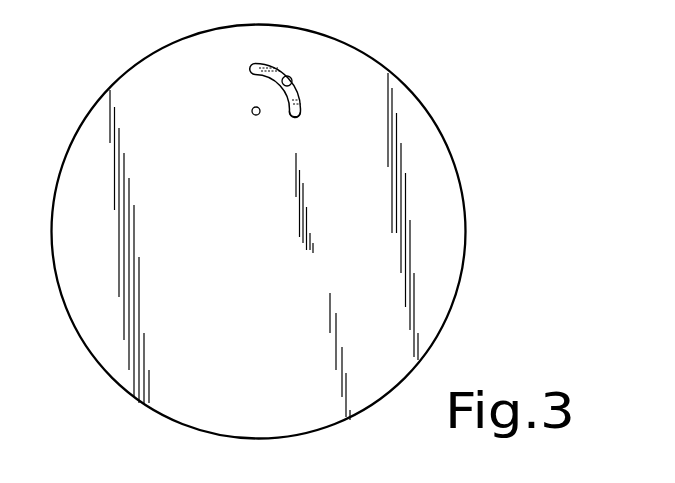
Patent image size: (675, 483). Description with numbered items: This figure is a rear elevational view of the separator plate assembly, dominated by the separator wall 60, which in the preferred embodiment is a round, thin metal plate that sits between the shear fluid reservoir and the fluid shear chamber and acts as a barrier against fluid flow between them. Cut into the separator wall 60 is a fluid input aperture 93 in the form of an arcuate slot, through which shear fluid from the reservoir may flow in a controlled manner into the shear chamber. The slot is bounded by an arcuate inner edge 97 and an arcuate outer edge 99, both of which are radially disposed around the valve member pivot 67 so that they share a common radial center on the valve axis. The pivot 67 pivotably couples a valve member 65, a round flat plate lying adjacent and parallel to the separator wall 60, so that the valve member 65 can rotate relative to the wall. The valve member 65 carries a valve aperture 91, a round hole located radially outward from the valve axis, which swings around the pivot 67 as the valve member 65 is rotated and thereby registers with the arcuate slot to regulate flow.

The separator wall 60 is at (300, 287).
The valve member 65 is at (260, 63).
The valve member pivot 67 is at (253, 115).
The valve aperture 91 is at (292, 80).
The fluid input aperture 93 is at (270, 56).
The arcuate inner edge 97 is at (292, 111).
The arcuate outer edge 99 is at (304, 102).